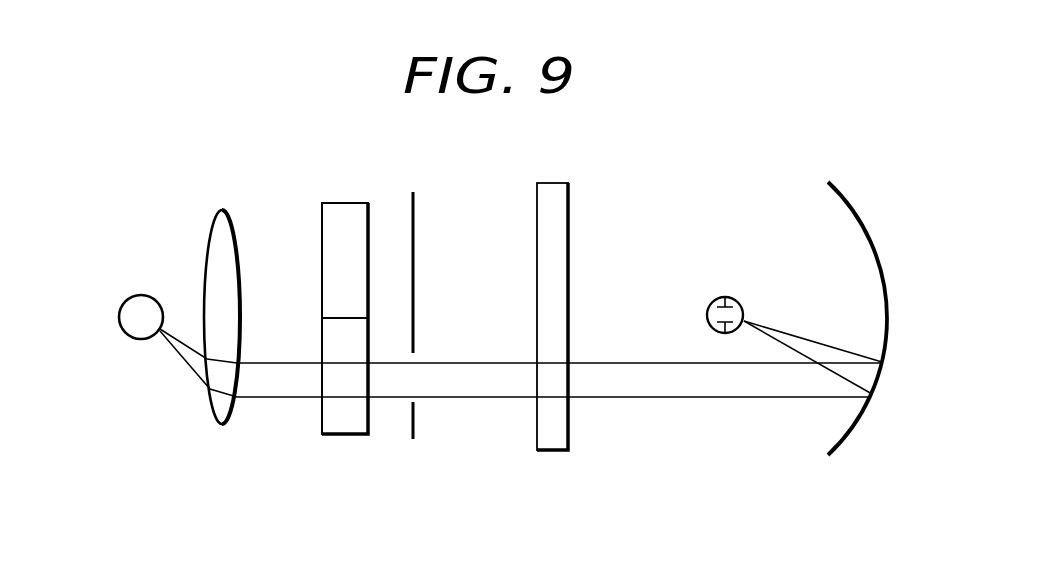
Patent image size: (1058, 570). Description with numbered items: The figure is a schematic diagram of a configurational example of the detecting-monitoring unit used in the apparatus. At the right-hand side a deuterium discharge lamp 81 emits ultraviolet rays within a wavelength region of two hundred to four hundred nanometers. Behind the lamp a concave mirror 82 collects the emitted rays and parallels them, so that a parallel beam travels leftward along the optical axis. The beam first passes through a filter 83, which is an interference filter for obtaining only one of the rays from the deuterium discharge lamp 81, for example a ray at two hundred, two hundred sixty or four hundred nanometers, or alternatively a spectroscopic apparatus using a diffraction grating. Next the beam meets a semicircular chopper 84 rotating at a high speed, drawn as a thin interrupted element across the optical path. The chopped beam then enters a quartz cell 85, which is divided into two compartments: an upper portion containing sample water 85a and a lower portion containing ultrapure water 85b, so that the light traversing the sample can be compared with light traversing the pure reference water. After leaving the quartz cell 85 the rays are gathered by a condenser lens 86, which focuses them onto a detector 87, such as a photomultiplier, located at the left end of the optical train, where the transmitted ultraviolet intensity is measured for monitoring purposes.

The deuterium discharge lamp 81 is at (734, 298).
The concave mirror 82 is at (887, 295).
The filter 83 is at (558, 207).
The semicircular chopper 84 is at (416, 199).
The quartz cell 85 is at (345, 436).
The sample water 85a is at (330, 228).
The ultrapure water 85b is at (330, 339).
The condenser lens 86 is at (213, 248).
The detector 87 is at (126, 312).